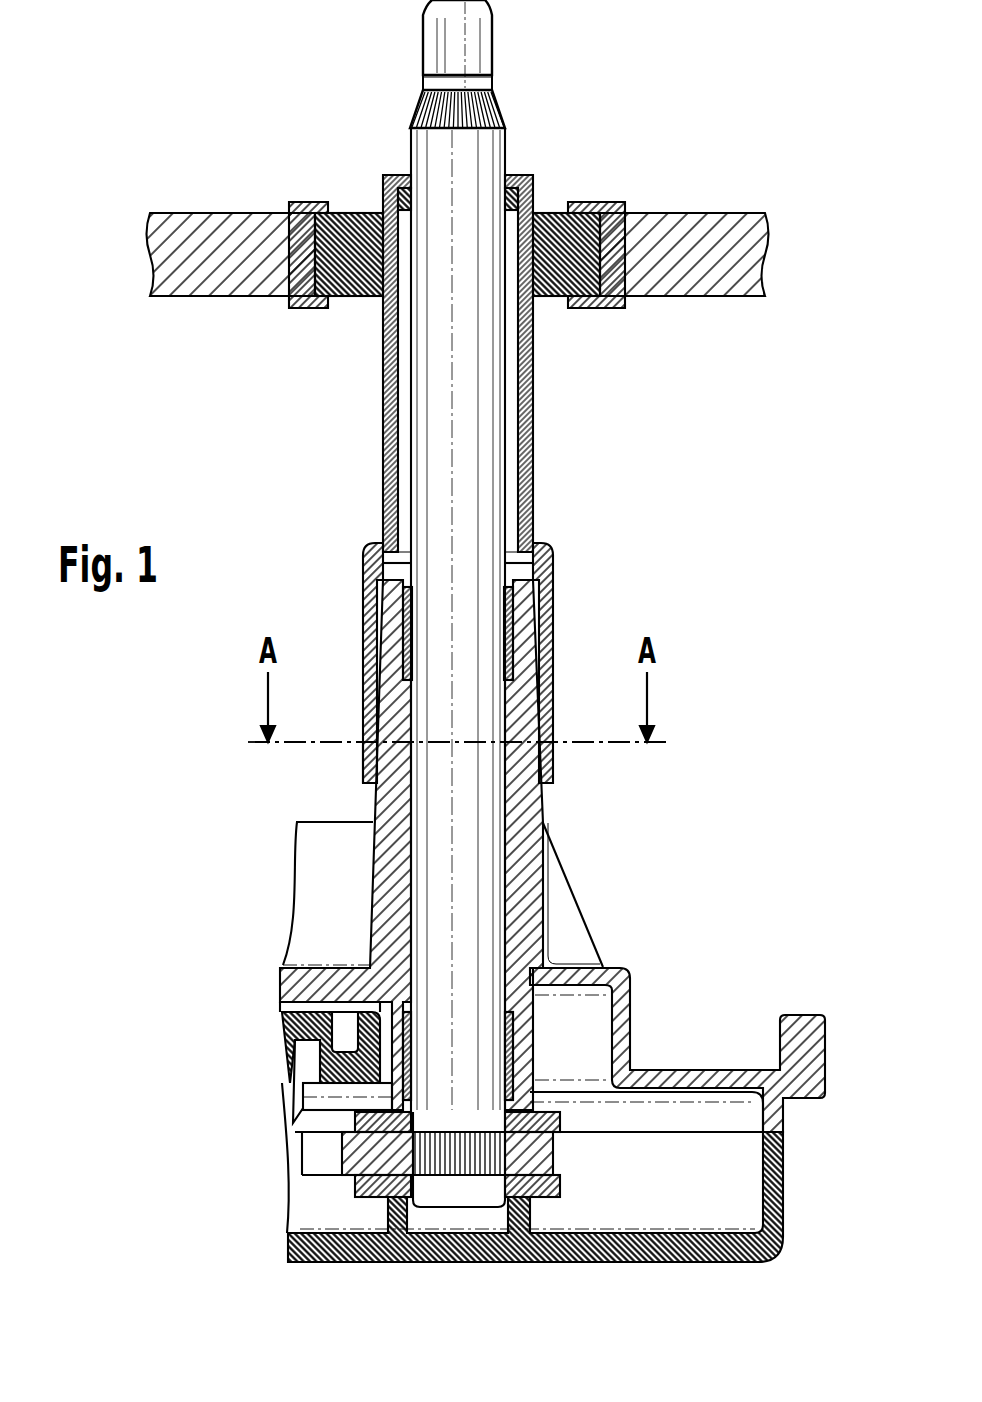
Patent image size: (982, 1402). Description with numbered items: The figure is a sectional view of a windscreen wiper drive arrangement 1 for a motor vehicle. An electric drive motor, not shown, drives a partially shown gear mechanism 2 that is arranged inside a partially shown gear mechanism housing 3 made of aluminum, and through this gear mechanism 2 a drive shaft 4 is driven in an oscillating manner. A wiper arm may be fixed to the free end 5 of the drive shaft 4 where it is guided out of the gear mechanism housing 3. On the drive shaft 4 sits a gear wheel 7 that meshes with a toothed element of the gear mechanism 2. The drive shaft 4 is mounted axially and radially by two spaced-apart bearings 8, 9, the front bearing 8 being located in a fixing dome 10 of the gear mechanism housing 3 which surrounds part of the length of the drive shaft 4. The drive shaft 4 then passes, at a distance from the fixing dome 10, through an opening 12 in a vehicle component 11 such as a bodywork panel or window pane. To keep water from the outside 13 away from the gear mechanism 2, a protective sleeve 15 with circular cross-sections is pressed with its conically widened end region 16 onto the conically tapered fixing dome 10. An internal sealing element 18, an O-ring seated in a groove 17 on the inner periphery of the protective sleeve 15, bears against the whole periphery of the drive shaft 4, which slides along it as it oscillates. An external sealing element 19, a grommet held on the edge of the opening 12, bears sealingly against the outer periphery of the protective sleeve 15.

The windscreen wiper drive arrangement 1 is at (735, 585).
The gear mechanism 2 is at (323, 1167).
The gear mechanism housing 3 is at (703, 1080).
The drive shaft 4 is at (487, 533).
The free end 5 is at (485, 52).
The gear wheel 7 is at (382, 1160).
The front bearing 8 is at (550, 585).
The bearing 9 is at (508, 1047).
The fixing dome 10 is at (528, 800).
The vehicle component 11 is at (683, 228).
The opening 12 is at (583, 273).
The outside 13 is at (642, 33).
The protective sleeve 15 is at (553, 657).
The conically widened end region 16 is at (363, 753).
The groove 17 is at (385, 185).
The internal sealing element 18 is at (383, 203).
The external sealing element 19 is at (570, 210).